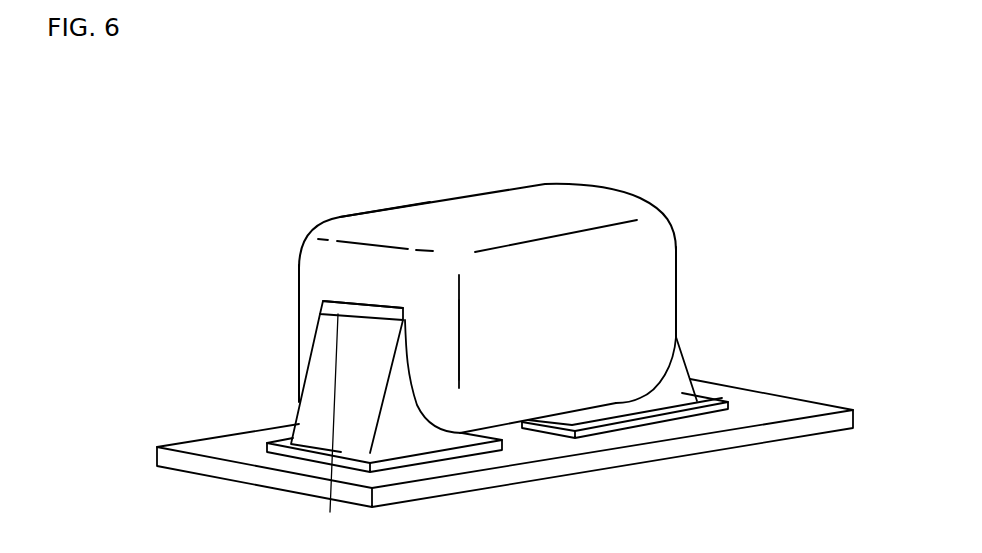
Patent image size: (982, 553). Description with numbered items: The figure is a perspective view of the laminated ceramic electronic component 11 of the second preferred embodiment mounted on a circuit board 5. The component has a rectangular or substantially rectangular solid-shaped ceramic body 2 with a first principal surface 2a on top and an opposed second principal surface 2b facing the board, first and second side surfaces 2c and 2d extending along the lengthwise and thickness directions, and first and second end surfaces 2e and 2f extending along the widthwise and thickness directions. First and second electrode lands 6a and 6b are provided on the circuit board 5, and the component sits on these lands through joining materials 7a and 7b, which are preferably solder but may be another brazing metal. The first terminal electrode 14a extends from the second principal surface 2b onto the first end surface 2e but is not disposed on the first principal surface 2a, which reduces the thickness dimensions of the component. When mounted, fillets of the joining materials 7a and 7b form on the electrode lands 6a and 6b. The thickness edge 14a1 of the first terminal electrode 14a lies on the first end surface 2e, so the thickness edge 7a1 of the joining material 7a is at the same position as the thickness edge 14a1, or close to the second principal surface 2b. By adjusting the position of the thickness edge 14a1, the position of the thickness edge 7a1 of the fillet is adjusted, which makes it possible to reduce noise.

The ceramic body 2 is at (473, 194).
The first principal surface 2a is at (522, 200).
The second principal surface 2b is at (522, 424).
The first side surface 2c is at (625, 300).
The second side surface 2d is at (412, 205).
The first end surface 2e is at (375, 273).
The second end surface 2f is at (677, 262).
The circuit board 5 is at (563, 470).
The first electrode land 6a is at (258, 444).
The second electrode land 6b is at (717, 395).
The joining material 7a is at (314, 337).
The thickness edge of the joining material 7a1 is at (332, 425).
The joining material 7b is at (687, 353).
The laminated ceramic electronic component 11 is at (319, 230).
The first terminal electrode 14a is at (320, 305).
The thickness edge of the first terminal electrode 14a1 is at (337, 298).